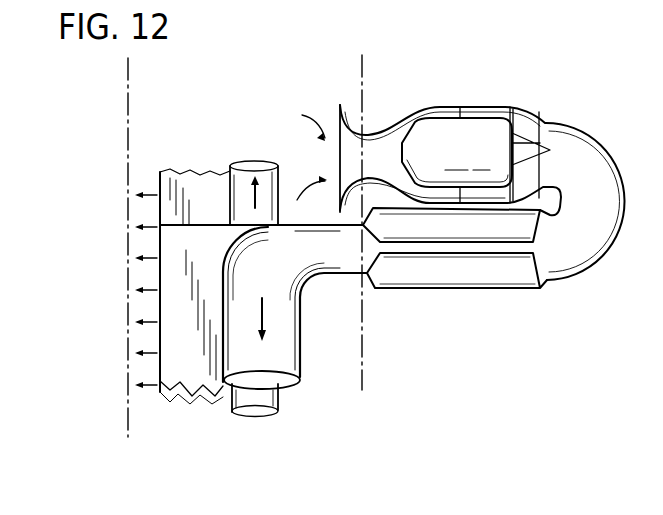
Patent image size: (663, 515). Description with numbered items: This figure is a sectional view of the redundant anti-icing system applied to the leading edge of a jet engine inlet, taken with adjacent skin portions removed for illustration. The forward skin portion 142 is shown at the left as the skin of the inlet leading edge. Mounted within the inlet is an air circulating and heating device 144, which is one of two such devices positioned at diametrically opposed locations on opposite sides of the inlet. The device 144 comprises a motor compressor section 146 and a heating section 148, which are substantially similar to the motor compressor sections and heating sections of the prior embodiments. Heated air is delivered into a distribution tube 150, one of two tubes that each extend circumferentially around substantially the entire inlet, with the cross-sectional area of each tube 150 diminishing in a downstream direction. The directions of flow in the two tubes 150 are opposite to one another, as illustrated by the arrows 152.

The forward skin portion 142 is at (128, 191).
The air circulating and heating device 144 is at (466, 104).
The motor compressor section 146 is at (483, 113).
The heating section 148 is at (443, 278).
The distribution tube 150 is at (240, 165).
The arrows 152 is at (255, 206).